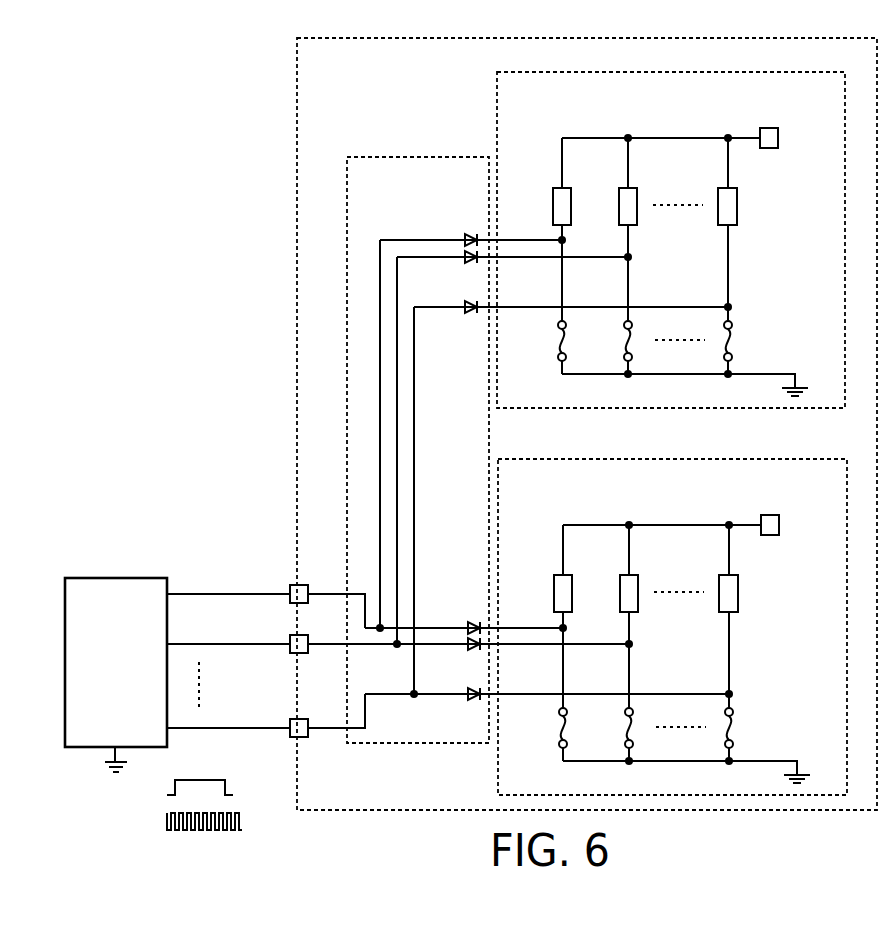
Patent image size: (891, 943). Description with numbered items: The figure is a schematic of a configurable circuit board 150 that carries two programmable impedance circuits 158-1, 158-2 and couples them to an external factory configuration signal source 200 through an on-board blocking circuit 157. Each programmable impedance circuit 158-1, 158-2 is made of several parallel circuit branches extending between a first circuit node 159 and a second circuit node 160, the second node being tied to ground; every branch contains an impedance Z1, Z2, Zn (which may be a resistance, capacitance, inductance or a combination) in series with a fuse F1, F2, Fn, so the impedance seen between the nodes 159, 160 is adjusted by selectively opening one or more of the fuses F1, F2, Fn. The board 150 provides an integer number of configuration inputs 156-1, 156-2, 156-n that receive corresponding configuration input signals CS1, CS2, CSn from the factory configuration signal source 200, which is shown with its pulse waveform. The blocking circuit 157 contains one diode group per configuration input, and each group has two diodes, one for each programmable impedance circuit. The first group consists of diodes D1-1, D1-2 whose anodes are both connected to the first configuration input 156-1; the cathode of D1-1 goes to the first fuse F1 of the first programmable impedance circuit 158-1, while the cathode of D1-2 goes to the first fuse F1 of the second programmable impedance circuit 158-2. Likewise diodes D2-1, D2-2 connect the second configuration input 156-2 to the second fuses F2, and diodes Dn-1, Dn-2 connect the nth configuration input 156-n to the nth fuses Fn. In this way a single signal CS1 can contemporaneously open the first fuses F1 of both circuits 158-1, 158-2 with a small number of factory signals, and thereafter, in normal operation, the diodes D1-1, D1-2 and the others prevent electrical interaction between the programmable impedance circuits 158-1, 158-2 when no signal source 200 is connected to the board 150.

The configurable circuit board 150 is at (292, 66).
The blocking circuit 157 is at (407, 155).
The first programmable impedance circuit 158-1 is at (548, 71).
The second programmable impedance circuit 158-2 is at (549, 458).
The first circuit node 159 is at (778, 138).
The second circuit node 160 is at (583, 375).
The first configuration input 156-1 is at (283, 584).
The second configuration input 156-2 is at (283, 634).
The nth configuration input 156-n is at (283, 717).
The factory configuration signal source 200 is at (113, 577).
The impedance Z1 is at (552, 186).
The impedance Z2 is at (618, 186).
The impedance Zn is at (717, 186).
The first fuse F1 is at (556, 345).
The second fuse F2 is at (622, 345).
The nth fuse Fn is at (739, 344).
The diode D1-1 is at (466, 232).
The diode D2-1 is at (468, 265).
The diode Dn-1 is at (470, 314).
The diode D1-2 is at (470, 620).
The diode D2-2 is at (472, 652).
The diode Dn-2 is at (472, 701).
The first configuration input signal CS1 is at (213, 594).
The second configuration input signal CS2 is at (213, 644).
The nth configuration input signal CSn is at (215, 729).